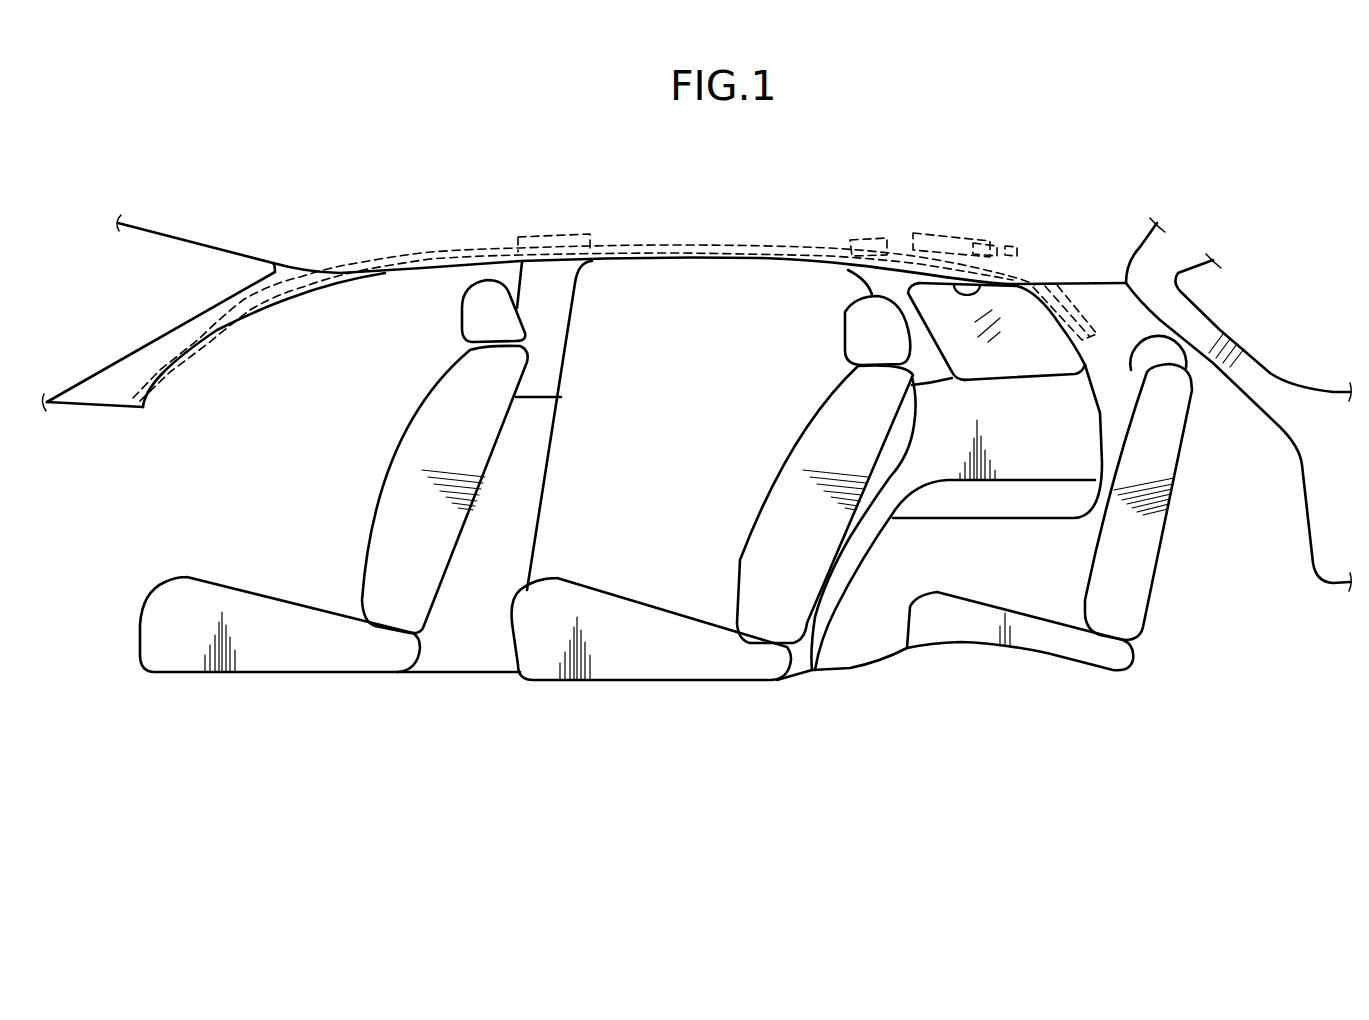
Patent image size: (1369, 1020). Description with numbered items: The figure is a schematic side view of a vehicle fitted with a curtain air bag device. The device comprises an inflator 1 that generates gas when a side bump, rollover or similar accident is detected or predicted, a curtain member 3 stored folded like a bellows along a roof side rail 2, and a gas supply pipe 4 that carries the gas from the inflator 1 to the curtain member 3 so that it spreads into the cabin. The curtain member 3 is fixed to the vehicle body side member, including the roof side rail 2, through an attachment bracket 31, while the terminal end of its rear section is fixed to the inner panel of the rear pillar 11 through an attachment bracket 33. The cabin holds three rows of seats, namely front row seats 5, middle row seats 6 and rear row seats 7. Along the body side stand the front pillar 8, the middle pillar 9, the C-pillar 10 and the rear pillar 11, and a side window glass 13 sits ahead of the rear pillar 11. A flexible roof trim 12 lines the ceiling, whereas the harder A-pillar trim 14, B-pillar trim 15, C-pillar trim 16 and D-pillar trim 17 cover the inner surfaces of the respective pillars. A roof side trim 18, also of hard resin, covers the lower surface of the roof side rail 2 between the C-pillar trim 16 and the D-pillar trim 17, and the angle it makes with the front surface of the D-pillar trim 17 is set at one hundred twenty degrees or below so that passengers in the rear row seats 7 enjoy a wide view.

The inflator 1 is at (987, 242).
The roof side rail 2 is at (622, 263).
The curtain member 3 is at (697, 247).
The gas supply pipe 4 is at (862, 237).
The front row seats 5 is at (340, 480).
The middle row seats 6 is at (752, 484).
The rear row seats 7 is at (1116, 548).
The front pillar 8 is at (213, 341).
The middle pillar 9 is at (594, 425).
The C-pillar 10 is at (853, 327).
The rear pillar 11 is at (1219, 384).
The roof trim 12 is at (307, 245).
The side window glass 13 is at (997, 360).
The A-pillar trim 14 is at (180, 323).
The B-pillar trim 15 is at (550, 357).
The C-pillar trim 16 is at (910, 327).
The D-pillar trim 17 is at (1238, 404).
The roof side trim 18 is at (984, 287).
The attachment bracket 31 is at (907, 240).
The attachment bracket 33 is at (1078, 292).